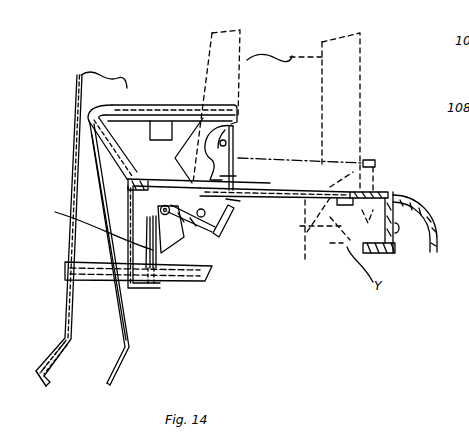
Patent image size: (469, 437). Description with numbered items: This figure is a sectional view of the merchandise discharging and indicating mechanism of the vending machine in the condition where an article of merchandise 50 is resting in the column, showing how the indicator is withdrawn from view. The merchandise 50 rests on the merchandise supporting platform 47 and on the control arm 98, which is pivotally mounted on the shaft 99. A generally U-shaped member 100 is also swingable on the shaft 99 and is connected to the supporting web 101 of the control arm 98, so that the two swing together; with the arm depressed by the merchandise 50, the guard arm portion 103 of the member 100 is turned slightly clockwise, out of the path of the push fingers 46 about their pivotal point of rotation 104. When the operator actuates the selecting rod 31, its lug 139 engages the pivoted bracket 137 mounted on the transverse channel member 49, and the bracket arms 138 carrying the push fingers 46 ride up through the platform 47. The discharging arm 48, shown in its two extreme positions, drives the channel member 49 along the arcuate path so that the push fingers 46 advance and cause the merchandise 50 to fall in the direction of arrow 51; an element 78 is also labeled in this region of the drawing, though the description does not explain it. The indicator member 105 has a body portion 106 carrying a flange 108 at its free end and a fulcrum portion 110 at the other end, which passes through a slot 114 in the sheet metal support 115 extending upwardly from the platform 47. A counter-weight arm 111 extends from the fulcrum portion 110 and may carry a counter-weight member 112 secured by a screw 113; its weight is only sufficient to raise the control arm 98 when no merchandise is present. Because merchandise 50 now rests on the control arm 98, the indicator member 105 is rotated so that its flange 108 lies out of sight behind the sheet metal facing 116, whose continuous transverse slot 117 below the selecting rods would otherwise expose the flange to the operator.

The selecting rod 31 is at (65, 262).
The push fingers 46 is at (246, 158).
The merchandise supporting platform 47 is at (390, 192).
The discharging arm 48 is at (276, 110).
The transverse channel member 49 is at (224, 218).
The article of merchandise 50 is at (377, 160).
The arrow 51 is at (418, 190).
The arm 78 is at (176, 232).
The control arm 98 is at (303, 167).
The shaft 99 is at (238, 133).
The U-shaped member 100 is at (242, 115).
The supporting web 101 is at (238, 176).
The arm portion 103 is at (183, 170).
The pivotal point of rotation 104 is at (158, 207).
The indicator member 105 is at (129, 332).
The body portion 106 is at (127, 316).
The flange 108 is at (130, 357).
The fulcrum portion 110 is at (79, 121).
The counter-weight arm 111 is at (140, 110).
The counter-weight member 112 is at (165, 140).
The screw 113 is at (165, 112).
The slot 114 is at (80, 103).
The sheet metal support 115 is at (108, 157).
The sheet metal facing 116 is at (74, 157).
The transverse slot 117 is at (54, 352).
The bracket 137 is at (170, 252).
The bracket arms 138 is at (230, 199).
The lug 139 is at (88, 226).